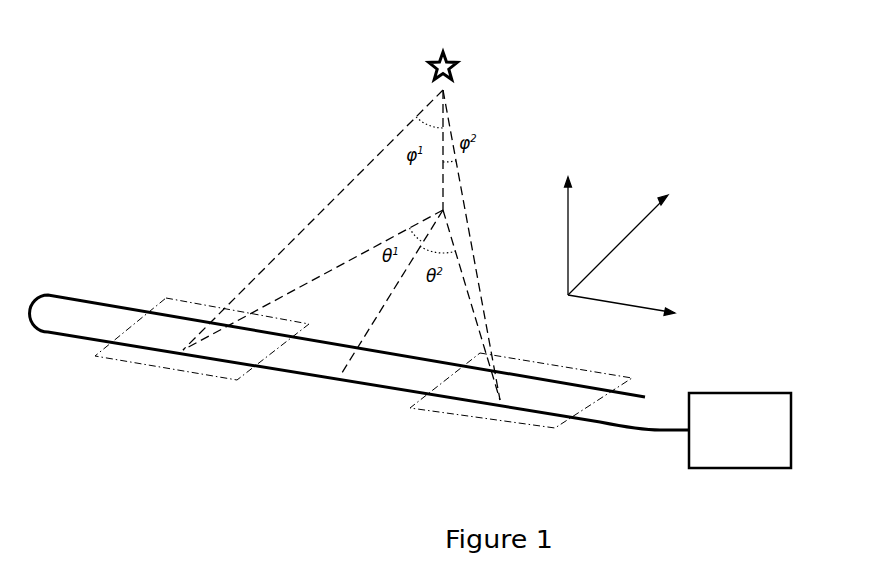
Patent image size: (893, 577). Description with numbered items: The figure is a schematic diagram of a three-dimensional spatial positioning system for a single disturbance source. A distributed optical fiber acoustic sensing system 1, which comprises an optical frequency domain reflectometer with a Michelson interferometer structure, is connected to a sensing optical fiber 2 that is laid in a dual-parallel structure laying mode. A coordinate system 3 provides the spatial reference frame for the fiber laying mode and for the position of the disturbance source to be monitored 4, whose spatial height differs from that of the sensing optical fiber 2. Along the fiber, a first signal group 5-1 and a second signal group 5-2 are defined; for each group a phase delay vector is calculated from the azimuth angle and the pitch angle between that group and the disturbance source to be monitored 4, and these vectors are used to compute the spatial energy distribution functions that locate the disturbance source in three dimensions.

The distributed optical fiber acoustic sensing system 1 is at (750, 404).
The sensing optical fiber 2 is at (359, 318).
The coordinate system 3 is at (618, 232).
The disturbance source to be monitored 4 is at (489, 50).
The first signal group 5-1 is at (202, 365).
The second signal group 5-2 is at (521, 411).